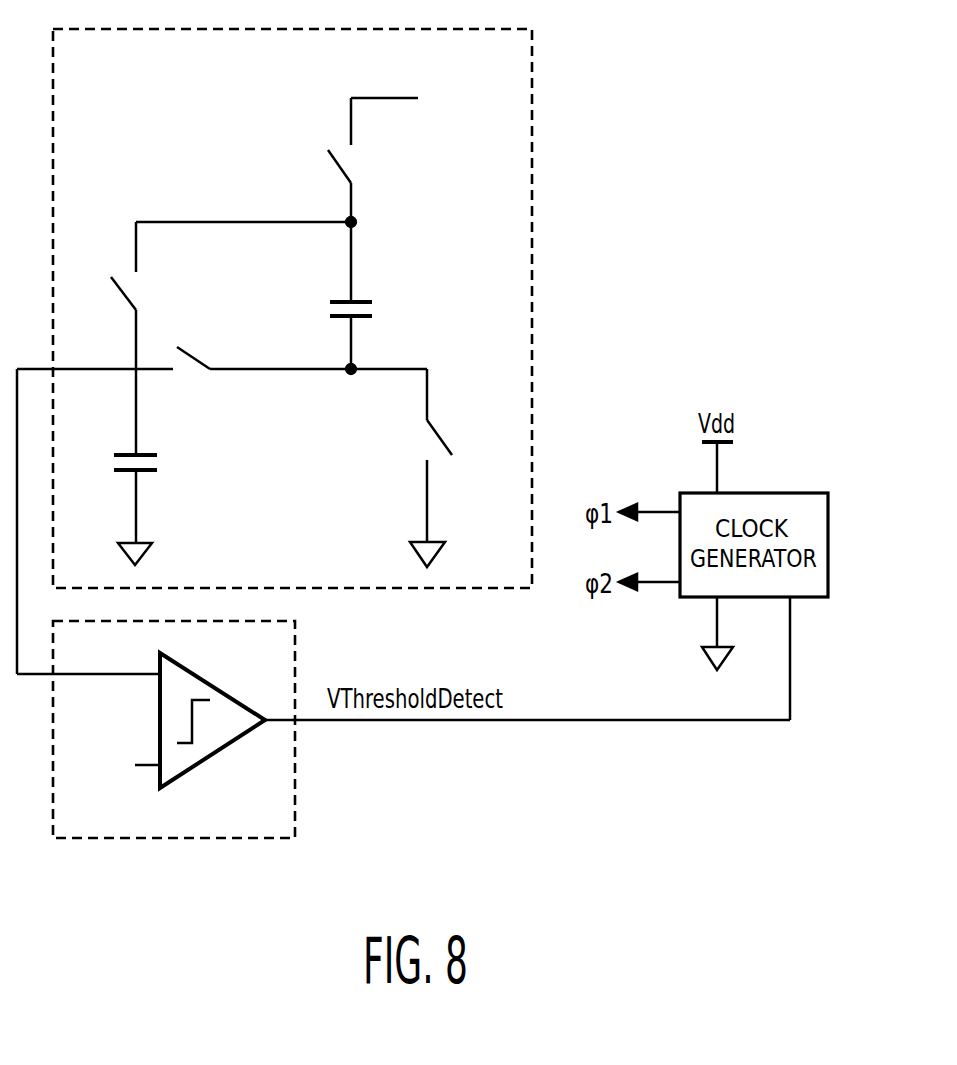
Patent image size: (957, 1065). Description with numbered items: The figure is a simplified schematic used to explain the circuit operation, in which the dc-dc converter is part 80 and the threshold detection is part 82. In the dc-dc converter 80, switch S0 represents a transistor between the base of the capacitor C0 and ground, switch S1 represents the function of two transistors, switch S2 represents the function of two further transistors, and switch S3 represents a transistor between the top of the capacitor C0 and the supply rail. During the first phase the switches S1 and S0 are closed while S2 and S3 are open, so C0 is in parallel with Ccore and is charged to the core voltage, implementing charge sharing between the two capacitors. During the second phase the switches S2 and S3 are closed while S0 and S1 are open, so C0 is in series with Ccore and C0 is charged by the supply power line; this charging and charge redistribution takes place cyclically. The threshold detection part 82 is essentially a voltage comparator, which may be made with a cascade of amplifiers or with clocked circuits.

The dc-dc converter 80 is at (323, 308).
The threshold detection part 82 is at (295, 659).
The switch S0 is at (464, 455).
The switch S1 is at (158, 295).
The switch S2 is at (264, 352).
The switch S3 is at (378, 186).
The capacitor Co C0 is at (368, 331).
The core capacitor Ccore is at (168, 494).